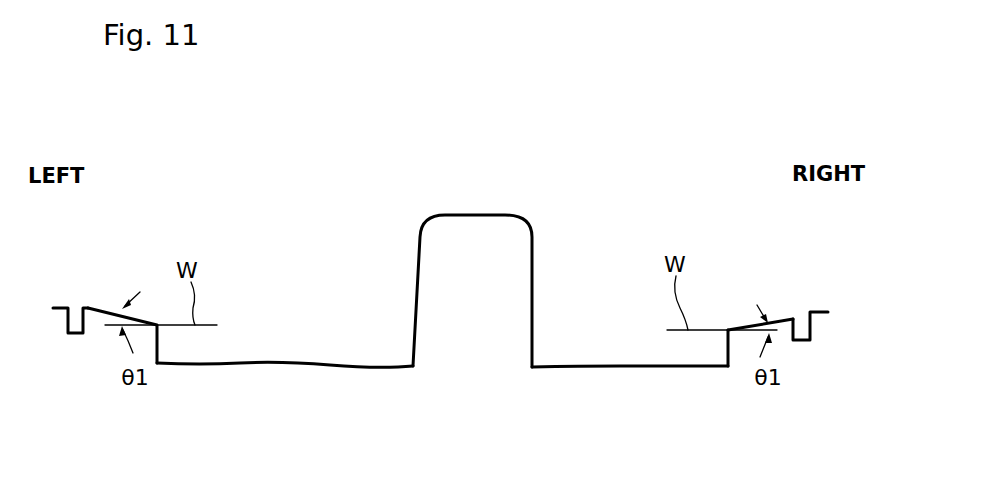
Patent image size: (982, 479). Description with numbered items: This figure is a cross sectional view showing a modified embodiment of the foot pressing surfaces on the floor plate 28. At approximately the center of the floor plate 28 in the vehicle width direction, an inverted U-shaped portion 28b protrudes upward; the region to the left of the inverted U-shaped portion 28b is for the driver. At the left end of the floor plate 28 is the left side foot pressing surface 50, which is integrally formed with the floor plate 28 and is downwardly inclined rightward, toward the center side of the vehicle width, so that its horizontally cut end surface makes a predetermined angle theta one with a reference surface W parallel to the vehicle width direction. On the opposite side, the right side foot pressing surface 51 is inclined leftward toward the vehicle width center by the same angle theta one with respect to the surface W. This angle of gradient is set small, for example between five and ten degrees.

The left side foot pressing surface 50 is at (102, 308).
The right side foot pressing surface 51 is at (782, 318).
The floor plate 28 is at (287, 364).
The inverted U-shaped portion 28b is at (455, 215).